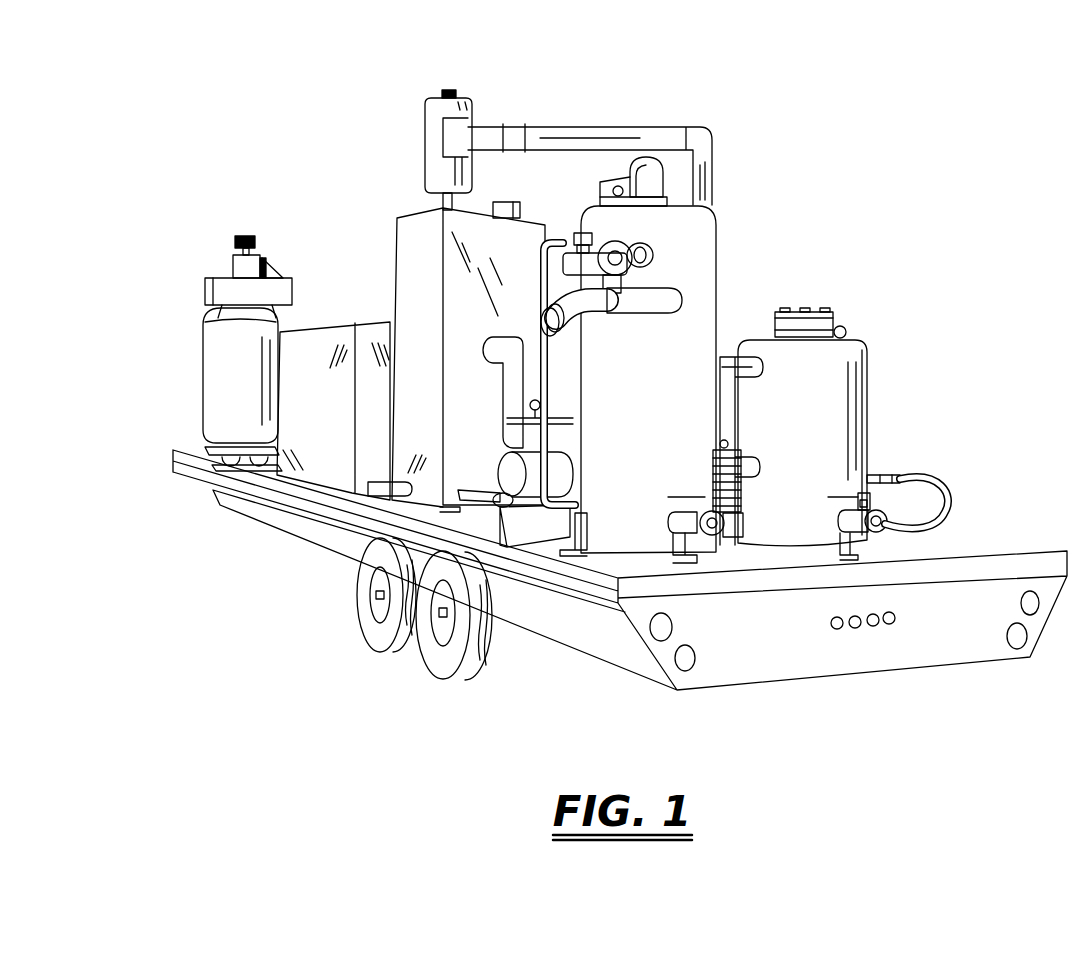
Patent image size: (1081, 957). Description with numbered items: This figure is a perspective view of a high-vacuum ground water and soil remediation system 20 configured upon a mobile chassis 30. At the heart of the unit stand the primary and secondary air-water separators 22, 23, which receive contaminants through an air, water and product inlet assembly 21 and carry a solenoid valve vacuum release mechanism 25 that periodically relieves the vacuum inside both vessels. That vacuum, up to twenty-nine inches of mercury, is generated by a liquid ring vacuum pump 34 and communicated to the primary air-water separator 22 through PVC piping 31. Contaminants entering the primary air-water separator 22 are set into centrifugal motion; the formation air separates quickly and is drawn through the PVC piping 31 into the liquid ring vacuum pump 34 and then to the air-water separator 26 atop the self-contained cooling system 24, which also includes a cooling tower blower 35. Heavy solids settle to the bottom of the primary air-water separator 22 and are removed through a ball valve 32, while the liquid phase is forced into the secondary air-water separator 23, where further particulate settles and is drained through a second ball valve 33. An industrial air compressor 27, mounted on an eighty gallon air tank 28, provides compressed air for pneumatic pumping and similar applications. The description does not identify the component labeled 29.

The high-vacuum ground water and soil remediation system 20 is at (912, 248).
The air, water and product inlet assembly 21 is at (683, 260).
The primary air-water separator 22 is at (700, 290).
The secondary air-water separator 23 is at (847, 357).
The self-contained cooling system 24 is at (353, 197).
The solenoid valve vacuum release mechanism 25 is at (575, 232).
The air-water separator 26 is at (437, 117).
The industrial air compressor 27 is at (222, 295).
The air tank 28 is at (222, 388).
The engine housing 29 is at (327, 471).
The mobile chassis 30 is at (963, 547).
The PVC piping 31 is at (632, 188).
The ball valve 32 is at (690, 533).
The ball valve 33 is at (858, 522).
The liquid ring vacuum pump 34 is at (738, 492).
The cooling tower blower 35 is at (517, 473).